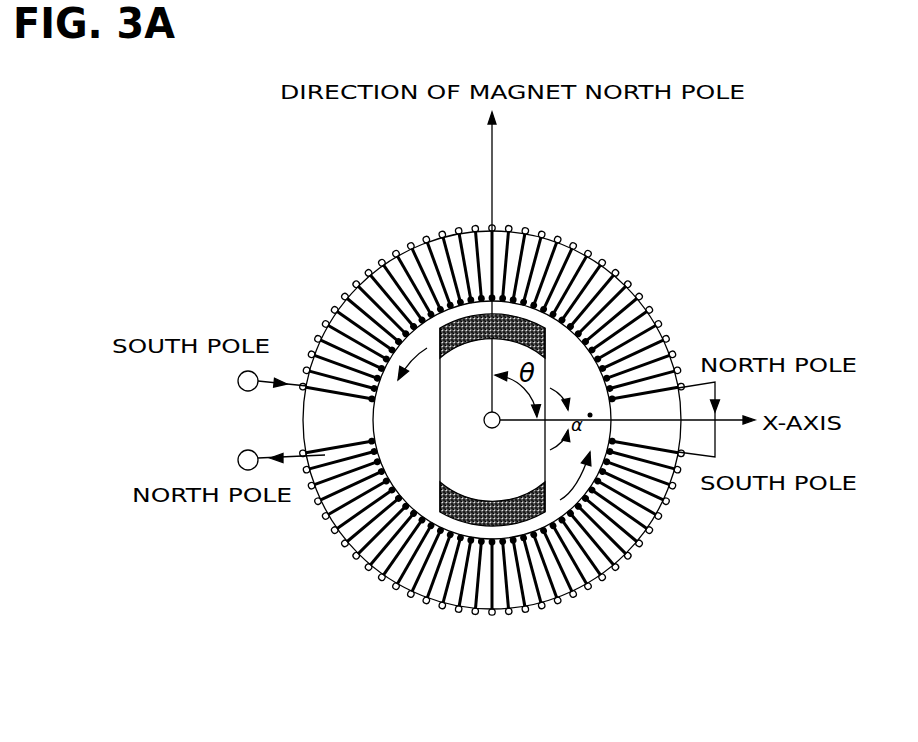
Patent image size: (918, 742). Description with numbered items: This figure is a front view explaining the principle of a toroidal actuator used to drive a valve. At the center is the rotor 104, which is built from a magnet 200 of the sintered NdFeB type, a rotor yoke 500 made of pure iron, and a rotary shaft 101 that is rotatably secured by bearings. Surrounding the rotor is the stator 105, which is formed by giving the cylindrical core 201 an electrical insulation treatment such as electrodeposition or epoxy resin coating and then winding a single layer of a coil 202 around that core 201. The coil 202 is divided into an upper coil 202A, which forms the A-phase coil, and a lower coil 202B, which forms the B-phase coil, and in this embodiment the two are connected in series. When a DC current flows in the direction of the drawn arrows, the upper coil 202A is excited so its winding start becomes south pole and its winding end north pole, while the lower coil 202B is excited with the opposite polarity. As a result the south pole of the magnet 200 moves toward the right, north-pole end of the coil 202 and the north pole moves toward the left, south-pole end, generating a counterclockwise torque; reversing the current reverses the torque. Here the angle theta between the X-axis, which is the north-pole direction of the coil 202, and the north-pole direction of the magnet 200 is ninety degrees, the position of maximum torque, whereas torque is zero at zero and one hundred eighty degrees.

The rotary shaft 101 is at (484, 420).
The rotor 104 is at (567, 387).
The stator 105 is at (365, 270).
The magnet 200 is at (545, 298).
The cylindrical core 201 is at (322, 422).
The coil 202 is at (297, 390).
The upper coil 202A is at (407, 240).
The lower coil 202B is at (536, 622).
The rotor yoke 500 is at (527, 463).